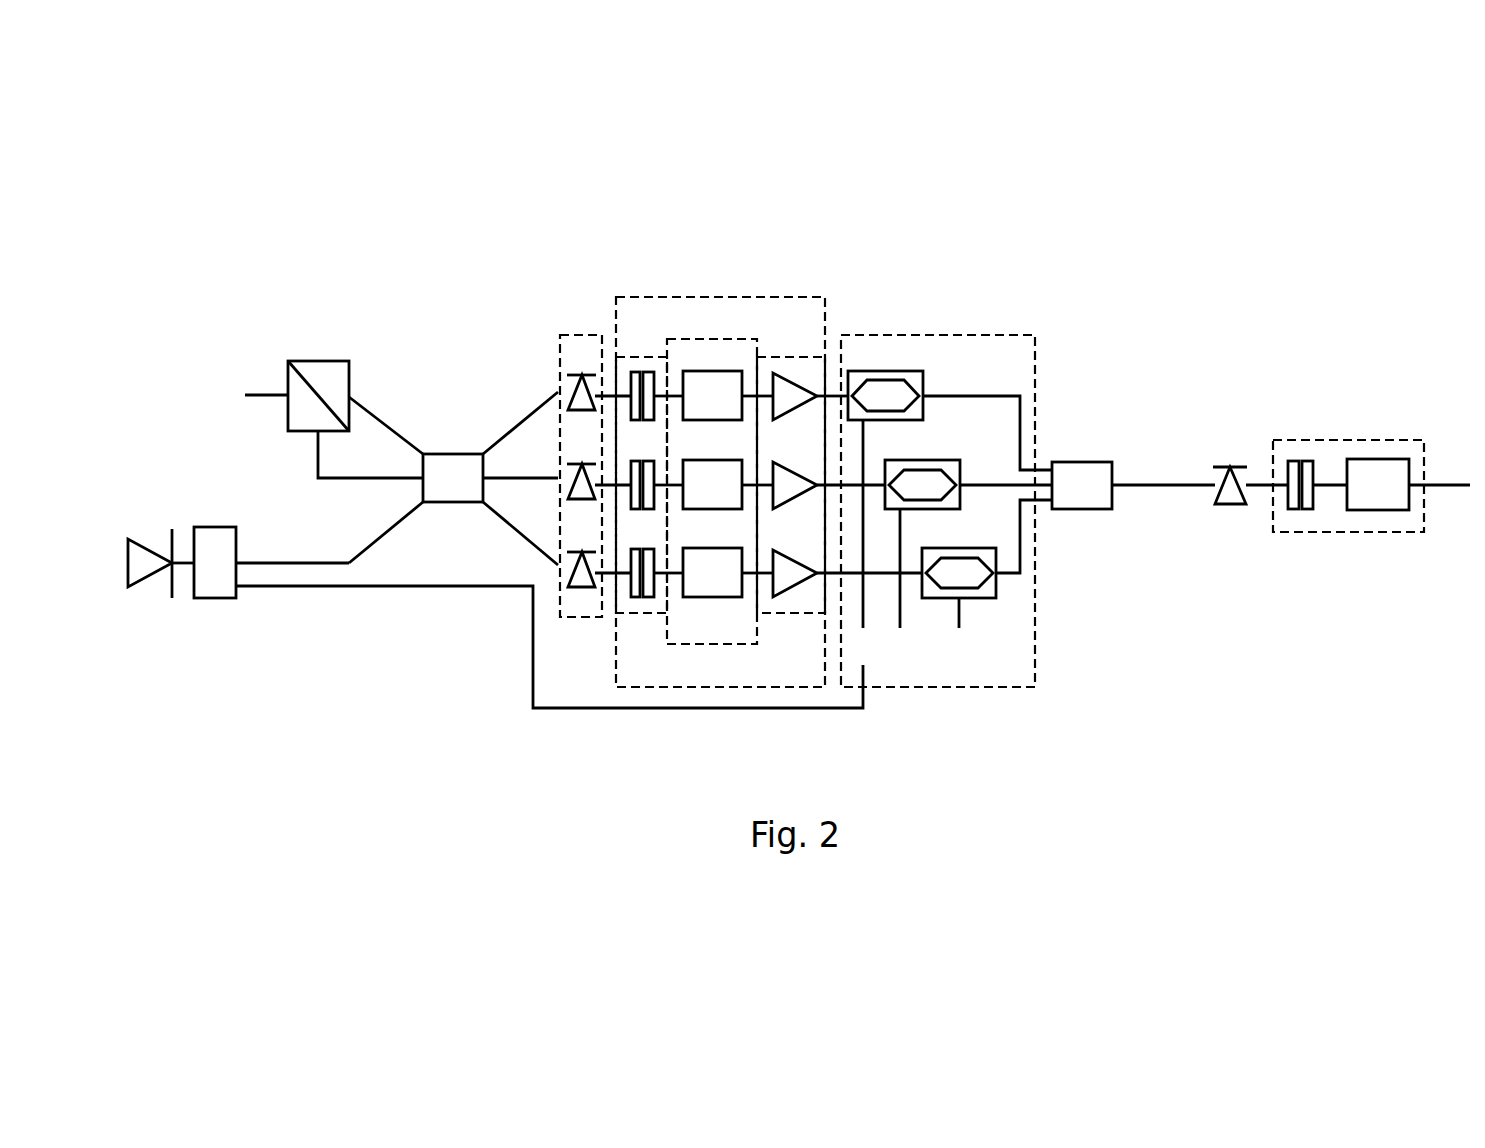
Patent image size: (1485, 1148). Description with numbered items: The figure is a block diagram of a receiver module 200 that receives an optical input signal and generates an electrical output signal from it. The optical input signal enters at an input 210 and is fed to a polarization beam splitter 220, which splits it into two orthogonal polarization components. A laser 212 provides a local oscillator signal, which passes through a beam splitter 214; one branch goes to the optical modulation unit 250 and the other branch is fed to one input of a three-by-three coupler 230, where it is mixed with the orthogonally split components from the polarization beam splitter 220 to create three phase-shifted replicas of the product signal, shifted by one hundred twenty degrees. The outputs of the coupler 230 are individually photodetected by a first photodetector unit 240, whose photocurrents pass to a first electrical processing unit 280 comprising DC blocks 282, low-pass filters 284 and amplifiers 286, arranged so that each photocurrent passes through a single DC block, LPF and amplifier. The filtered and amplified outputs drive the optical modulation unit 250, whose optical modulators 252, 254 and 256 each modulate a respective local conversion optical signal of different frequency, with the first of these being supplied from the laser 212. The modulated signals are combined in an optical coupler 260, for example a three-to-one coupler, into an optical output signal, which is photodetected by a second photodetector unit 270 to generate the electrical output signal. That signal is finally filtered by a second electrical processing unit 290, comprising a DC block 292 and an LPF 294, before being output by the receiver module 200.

The receiver module 200 is at (255, 227).
The input 210 is at (265, 392).
The laser 212 is at (158, 580).
The beam splitter 214 is at (238, 600).
The polarization beam splitter 220 is at (332, 360).
The 3×3 coupler 230 is at (466, 453).
The first photodetector unit 240 is at (577, 334).
The optical modulation unit 250 is at (1036, 668).
The optical modulator 252 is at (877, 370).
The optical modulator 254 is at (953, 459).
The optical modulator 256 is at (990, 547).
The optical coupler 260 is at (1100, 461).
The second photodetector unit 270 is at (1238, 466).
The first electrical processing unit 280 is at (688, 296).
The DC blocks 282 is at (652, 614).
The low-pass filters 284 is at (717, 645).
The amplifiers 286 is at (806, 614).
The second electrical processing unit 290 is at (1408, 440).
The DC block 292 is at (1312, 502).
The LPF 294 is at (1410, 504).